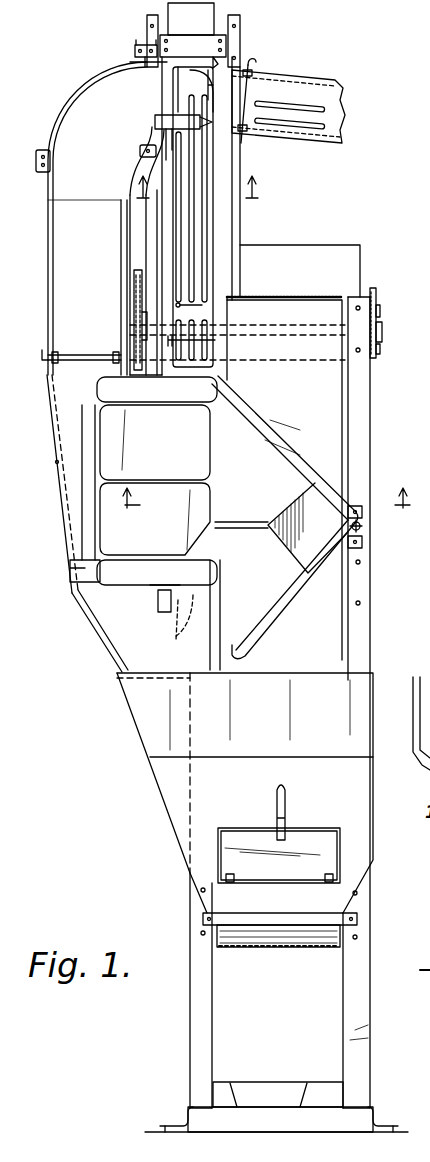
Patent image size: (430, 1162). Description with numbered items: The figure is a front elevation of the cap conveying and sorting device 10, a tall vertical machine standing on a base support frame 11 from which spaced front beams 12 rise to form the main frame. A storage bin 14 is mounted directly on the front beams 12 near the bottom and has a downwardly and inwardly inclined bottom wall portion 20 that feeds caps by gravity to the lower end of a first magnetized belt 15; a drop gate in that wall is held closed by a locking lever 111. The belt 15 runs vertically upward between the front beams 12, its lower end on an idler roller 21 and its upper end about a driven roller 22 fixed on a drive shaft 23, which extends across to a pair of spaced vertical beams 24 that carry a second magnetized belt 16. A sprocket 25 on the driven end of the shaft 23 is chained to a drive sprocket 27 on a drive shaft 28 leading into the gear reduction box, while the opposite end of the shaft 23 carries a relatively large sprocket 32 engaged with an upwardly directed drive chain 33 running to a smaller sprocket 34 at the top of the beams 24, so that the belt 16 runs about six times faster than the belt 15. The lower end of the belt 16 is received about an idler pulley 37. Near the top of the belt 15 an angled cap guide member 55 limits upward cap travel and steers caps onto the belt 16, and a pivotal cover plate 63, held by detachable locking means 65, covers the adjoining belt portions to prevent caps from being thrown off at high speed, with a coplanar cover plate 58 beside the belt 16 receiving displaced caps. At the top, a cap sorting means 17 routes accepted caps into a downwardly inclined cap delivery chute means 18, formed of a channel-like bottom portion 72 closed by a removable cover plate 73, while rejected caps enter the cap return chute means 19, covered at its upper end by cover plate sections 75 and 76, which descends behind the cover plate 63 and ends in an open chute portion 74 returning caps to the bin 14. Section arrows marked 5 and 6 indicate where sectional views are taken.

The section line 5- 5 is at (196, 195).
The section line 6- 6 is at (265, 508).
The cap conveying and sorting device 10 is at (327, 212).
The base support frame 11 is at (373, 1120).
The front beams 12 is at (362, 953).
The bin 14 is at (375, 687).
The belt 15 is at (343, 424).
The belt 16 is at (173, 610).
The cap sorting means 17 is at (173, 117).
The cap delivery chute means 18 is at (320, 78).
The cap return chute means 19 is at (50, 243).
The bottom wall portion 20 is at (352, 797).
The idler roller 21 is at (258, 948).
The driven roller 22 is at (284, 298).
The drive shaft 23 is at (382, 332).
The beams 24 is at (222, 153).
The sprocket 25 is at (380, 350).
The drive sprocket 27 is at (373, 296).
The drive shaft 28 is at (378, 309).
The sprocket 32 is at (143, 302).
The drive chain 33 is at (137, 252).
The sprocket 34 is at (137, 44).
The idler pulley 37 is at (172, 627).
The cap guide member 55 is at (268, 423).
The cover plate 58 is at (53, 494).
The pivotal cover plate 63 is at (175, 447).
The detachable locking means 65 is at (362, 528).
The channel-like bottom portion 72 is at (278, 82).
The removable cover plate 73 is at (327, 95).
The open chute portion 74 is at (105, 632).
The cover plate section 75 is at (113, 92).
The cover plate section 76 is at (92, 333).
The locking lever 111 is at (275, 792).